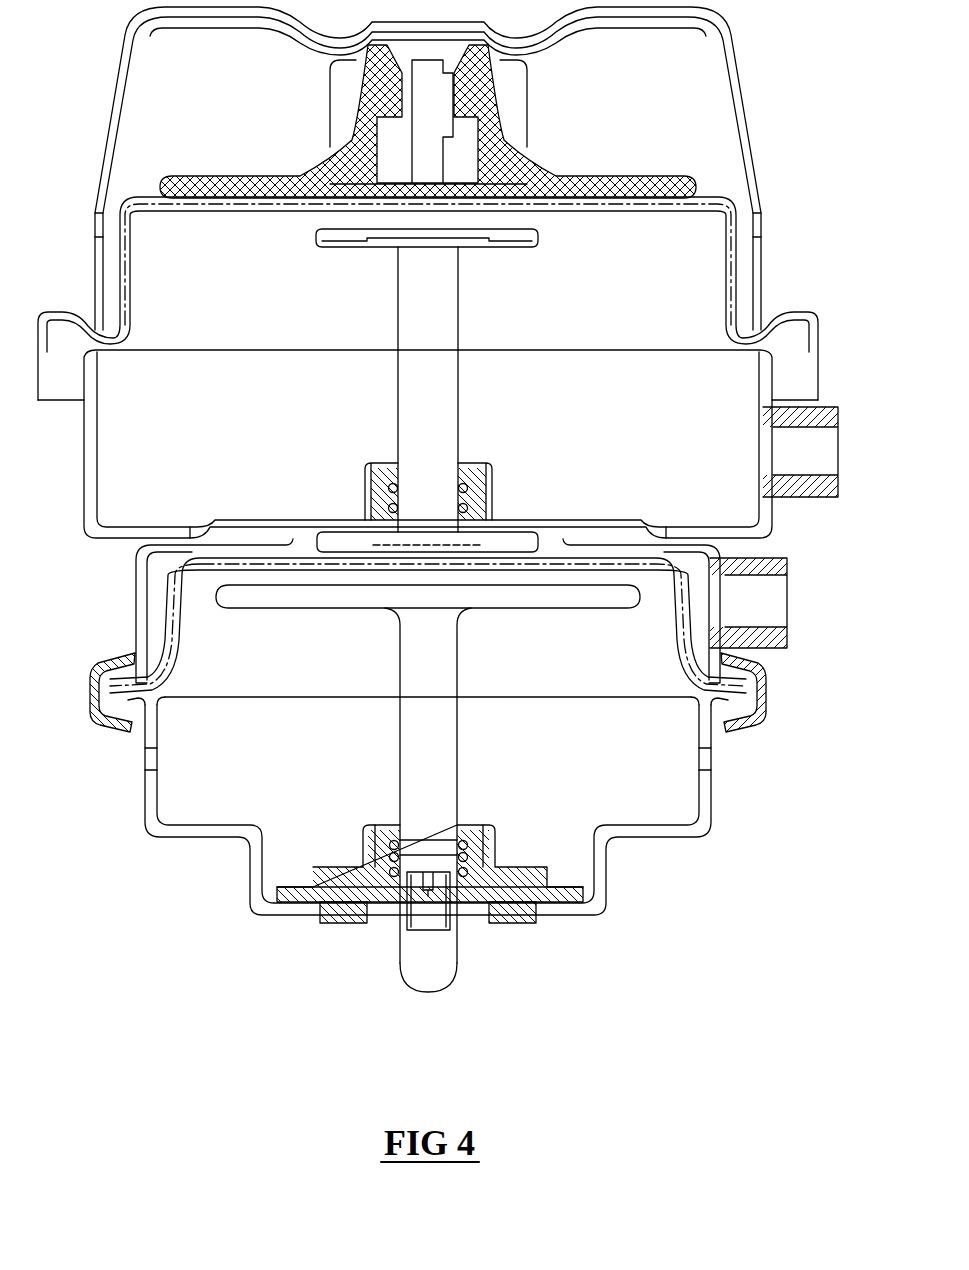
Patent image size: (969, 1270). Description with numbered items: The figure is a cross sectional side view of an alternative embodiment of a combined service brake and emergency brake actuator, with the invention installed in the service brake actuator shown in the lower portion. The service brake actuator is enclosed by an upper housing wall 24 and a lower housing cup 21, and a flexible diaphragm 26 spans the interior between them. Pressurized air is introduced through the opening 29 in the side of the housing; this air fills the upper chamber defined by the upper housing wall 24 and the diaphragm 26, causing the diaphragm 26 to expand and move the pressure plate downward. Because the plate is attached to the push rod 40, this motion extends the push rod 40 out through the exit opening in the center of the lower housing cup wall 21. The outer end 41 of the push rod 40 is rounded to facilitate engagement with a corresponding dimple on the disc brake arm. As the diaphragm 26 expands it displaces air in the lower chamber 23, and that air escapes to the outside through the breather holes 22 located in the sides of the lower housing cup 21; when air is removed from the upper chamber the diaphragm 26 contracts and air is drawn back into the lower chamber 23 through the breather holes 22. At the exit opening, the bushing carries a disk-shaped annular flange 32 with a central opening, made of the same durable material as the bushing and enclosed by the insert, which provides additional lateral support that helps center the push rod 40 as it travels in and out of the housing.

The lower housing cup wall 21 is at (163, 823).
The breather holes 22 is at (150, 760).
The lower chamber 23 is at (634, 795).
The upper housing wall 24 is at (140, 618).
The flexible diaphragm 26 is at (176, 630).
The opening 29 is at (772, 608).
The disk-shaped annular flange 32 is at (339, 880).
The push rod 40 is at (433, 945).
The outer end 41 is at (423, 985).